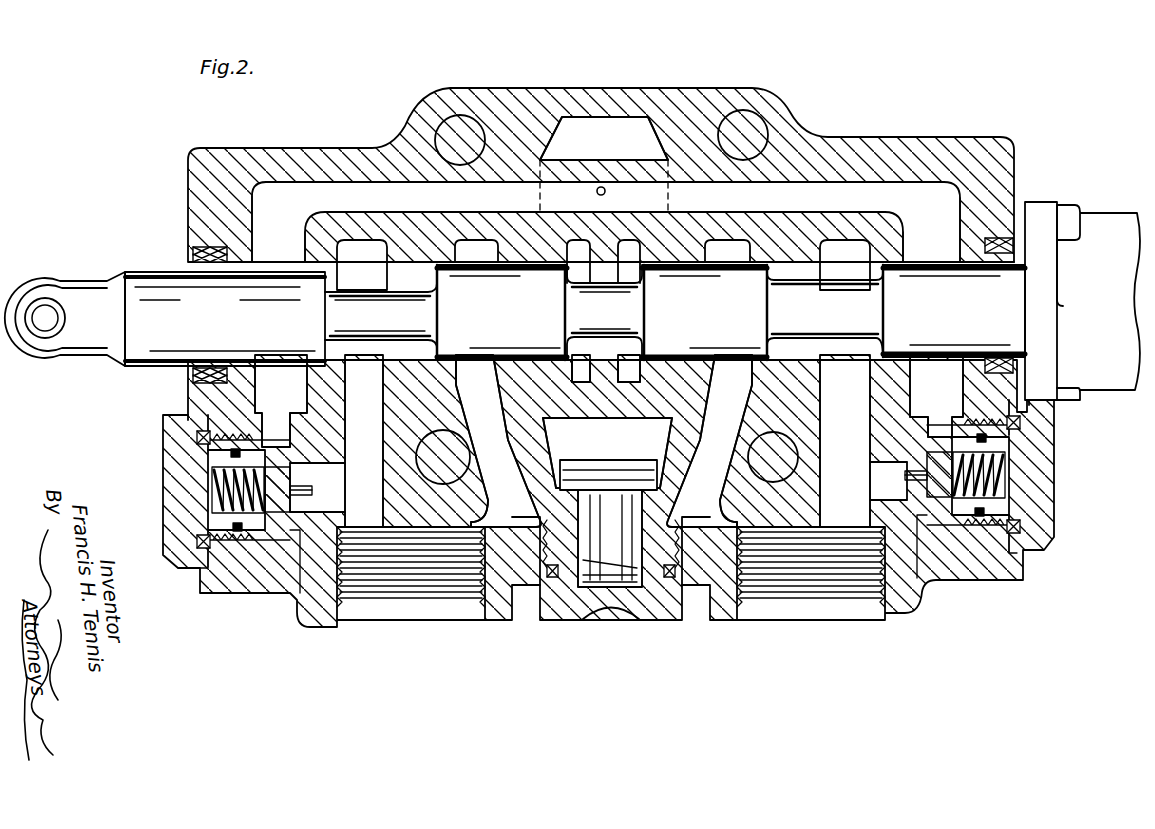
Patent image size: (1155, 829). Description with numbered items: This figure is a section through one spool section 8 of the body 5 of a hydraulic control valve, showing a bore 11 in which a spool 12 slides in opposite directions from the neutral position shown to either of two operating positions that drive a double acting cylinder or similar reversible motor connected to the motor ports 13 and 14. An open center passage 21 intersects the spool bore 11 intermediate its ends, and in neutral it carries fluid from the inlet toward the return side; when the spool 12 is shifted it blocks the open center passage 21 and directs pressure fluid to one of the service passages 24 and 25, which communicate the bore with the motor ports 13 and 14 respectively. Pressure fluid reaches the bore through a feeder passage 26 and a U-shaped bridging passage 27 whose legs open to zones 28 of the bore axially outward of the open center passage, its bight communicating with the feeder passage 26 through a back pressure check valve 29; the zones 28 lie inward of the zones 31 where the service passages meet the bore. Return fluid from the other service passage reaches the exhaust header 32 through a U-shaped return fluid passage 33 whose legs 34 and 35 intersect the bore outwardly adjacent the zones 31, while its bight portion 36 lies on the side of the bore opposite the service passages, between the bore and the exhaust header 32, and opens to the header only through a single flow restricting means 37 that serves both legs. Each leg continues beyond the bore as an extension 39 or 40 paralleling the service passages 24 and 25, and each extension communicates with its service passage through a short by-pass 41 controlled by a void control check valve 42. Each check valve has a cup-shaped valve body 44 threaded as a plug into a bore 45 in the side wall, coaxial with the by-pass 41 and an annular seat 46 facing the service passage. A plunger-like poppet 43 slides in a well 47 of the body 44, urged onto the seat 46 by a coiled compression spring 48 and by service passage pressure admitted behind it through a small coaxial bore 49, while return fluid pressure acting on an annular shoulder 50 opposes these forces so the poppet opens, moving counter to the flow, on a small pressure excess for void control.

The body of a hydraulic control valve 5 is at (905, 85).
The spool section 8 is at (985, 137).
The bore 11 is at (220, 270).
The spool 12 is at (268, 329).
The motor port 13 is at (413, 600).
The motor port 14 is at (812, 600).
The open center passage 21 is at (640, 262).
The service passage 24 is at (370, 399).
The service passage 25 is at (858, 391).
The feeder passage 26 is at (601, 448).
The bridging passage 27 is at (714, 461).
The zones of the spool bore 28 is at (740, 260).
The back pressure check valve 29 is at (606, 477).
The zones 31 is at (858, 271).
The exhaust header 32 is at (602, 147).
The return fluid passage 33 is at (389, 186).
The leg of the return fluid passage 34 is at (287, 249).
The leg of the return fluid passage 35 is at (942, 233).
The bight portion 36 is at (720, 201).
The flow restricting means 37 is at (596, 190).
The extension of the return fluid passage 39 is at (291, 396).
The extension of the return fluid passage 40 is at (943, 389).
The by-pass 41 is at (330, 471).
The void control check valve 42 is at (255, 545).
The poppet 43 is at (281, 450).
The valve body 44 is at (185, 462).
The bore 45 is at (222, 580).
The annular seat 46 is at (282, 545).
The well 47 is at (212, 515).
The coiled compression spring 48 is at (210, 492).
The coaxial bore 49 is at (312, 490).
The annular shoulder 50 is at (248, 450).